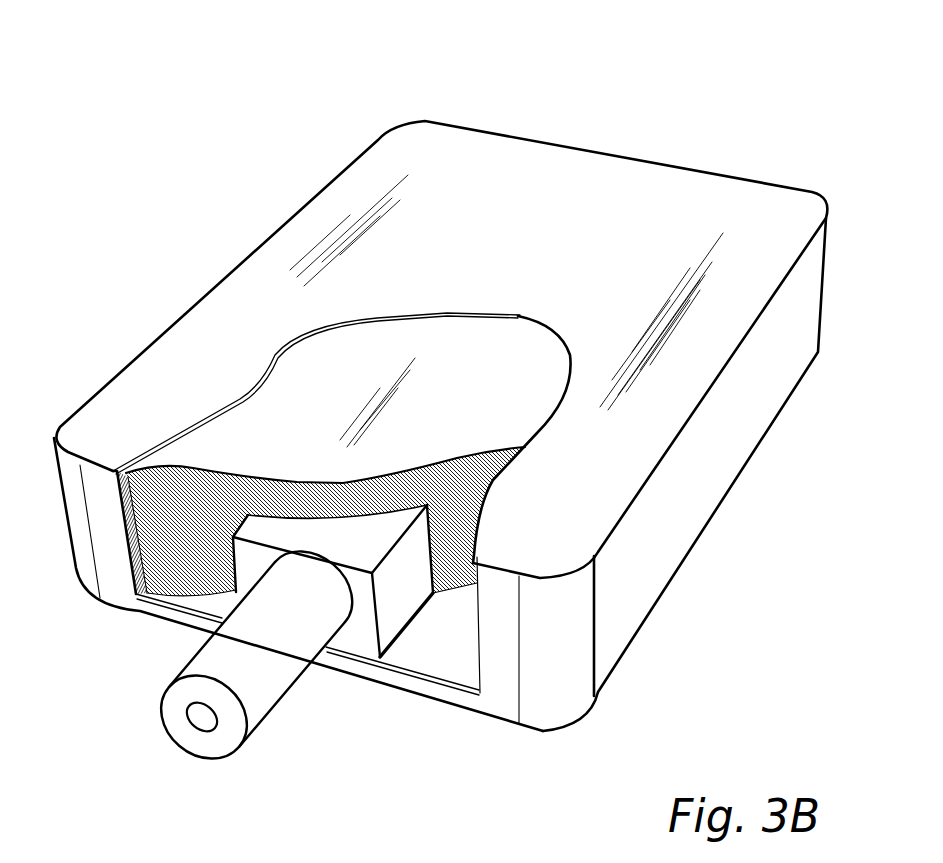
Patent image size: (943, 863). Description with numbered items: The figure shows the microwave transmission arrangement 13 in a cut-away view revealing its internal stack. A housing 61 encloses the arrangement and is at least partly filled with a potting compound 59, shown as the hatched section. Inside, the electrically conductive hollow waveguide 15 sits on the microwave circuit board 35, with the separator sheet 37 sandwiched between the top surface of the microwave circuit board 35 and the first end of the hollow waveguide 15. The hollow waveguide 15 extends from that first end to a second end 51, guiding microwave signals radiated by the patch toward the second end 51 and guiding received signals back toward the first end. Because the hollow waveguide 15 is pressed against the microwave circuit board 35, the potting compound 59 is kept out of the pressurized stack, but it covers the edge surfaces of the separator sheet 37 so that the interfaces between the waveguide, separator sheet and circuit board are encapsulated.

The microwave transmission arrangement 13 is at (697, 118).
The electrically conductive hollow waveguide 15 is at (297, 634).
The microwave circuit board 35 is at (459, 659).
The separator sheet 37 is at (398, 652).
The second end 51 is at (174, 702).
The potting compound 59 is at (170, 528).
The housing 61 is at (118, 398).